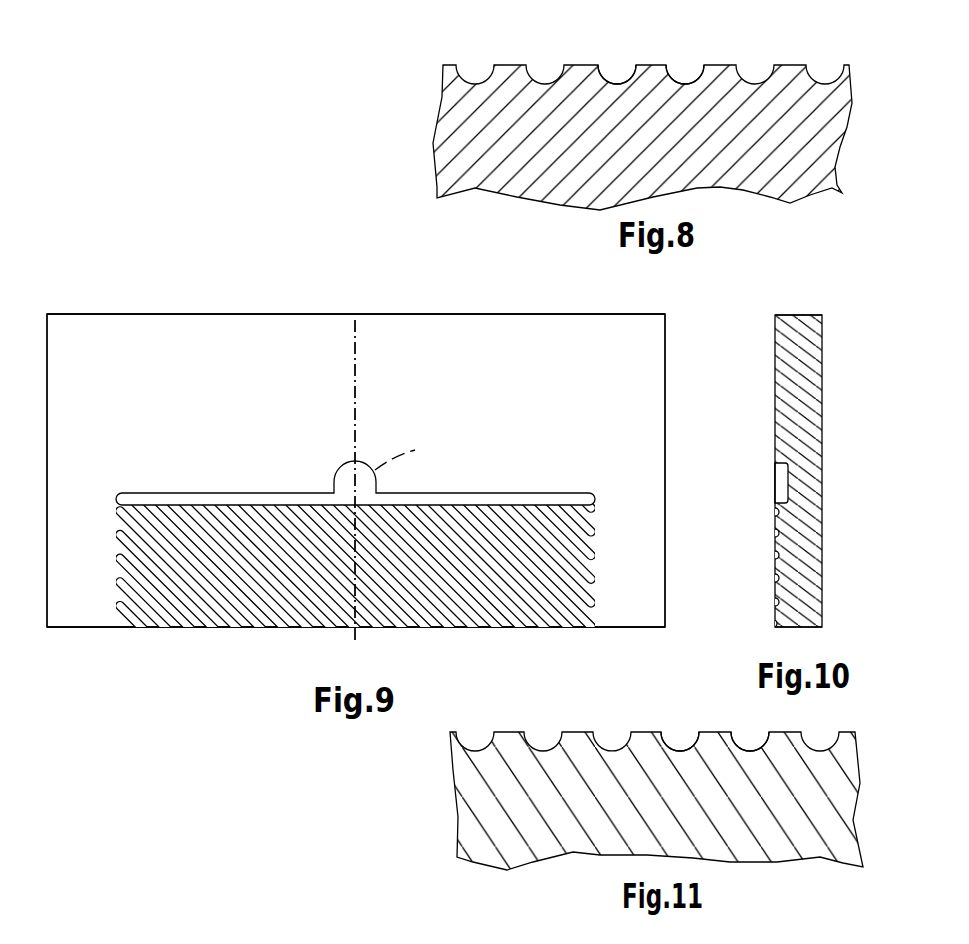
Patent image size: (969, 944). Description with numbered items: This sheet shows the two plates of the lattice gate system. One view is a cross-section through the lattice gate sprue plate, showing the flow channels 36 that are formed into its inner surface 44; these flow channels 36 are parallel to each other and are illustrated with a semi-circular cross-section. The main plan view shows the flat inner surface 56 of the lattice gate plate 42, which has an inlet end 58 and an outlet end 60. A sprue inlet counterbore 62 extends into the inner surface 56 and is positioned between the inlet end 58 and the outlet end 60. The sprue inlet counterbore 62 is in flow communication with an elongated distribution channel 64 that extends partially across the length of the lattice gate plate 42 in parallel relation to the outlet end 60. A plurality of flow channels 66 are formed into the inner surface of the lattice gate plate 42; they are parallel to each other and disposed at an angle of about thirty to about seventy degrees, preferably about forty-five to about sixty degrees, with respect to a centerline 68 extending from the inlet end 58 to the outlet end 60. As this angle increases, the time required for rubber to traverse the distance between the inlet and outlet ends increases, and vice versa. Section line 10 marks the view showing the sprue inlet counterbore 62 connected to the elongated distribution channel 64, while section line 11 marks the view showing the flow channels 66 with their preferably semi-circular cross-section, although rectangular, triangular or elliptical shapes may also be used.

In FIG. 8, the flow channels 36 is at (687, 82).
In FIG. 8, the inner surface 44 is at (727, 67).
In FIG. 9, the lattice gate plate 42 is at (356, 421).
In FIG. 9, the flat inner surface 56 is at (138, 355).
In FIG. 10, the flat inner surface 56 is at (775, 352).
In FIG. 11, the flat inner surface 56 is at (573, 732).
In FIG. 9, the inlet end 58 is at (468, 314).
In FIG. 10, the inlet end 58 is at (797, 315).
In FIG. 9, the outlet end 60 is at (90, 630).
In FIG. 10, the outlet end 60 is at (800, 627).
In FIG. 10, the sprue inlet counterbore 62 is at (782, 473).
In FIG. 9, the elongated distribution channel 64 is at (460, 493).
In FIG. 10, the elongated distribution channel 64 is at (780, 500).
In FIG. 9, the flow channels 66 is at (262, 600).
In FIG. 10, the flow channels 66 is at (778, 598).
In FIG. 11, the flow channels 66 is at (750, 747).
In FIG. 9, the centerline 68 is at (357, 397).
In FIG. 9, the section line 10— 10 is at (355, 305).
In FIG. 9, the section line 11— 11 is at (520, 567).